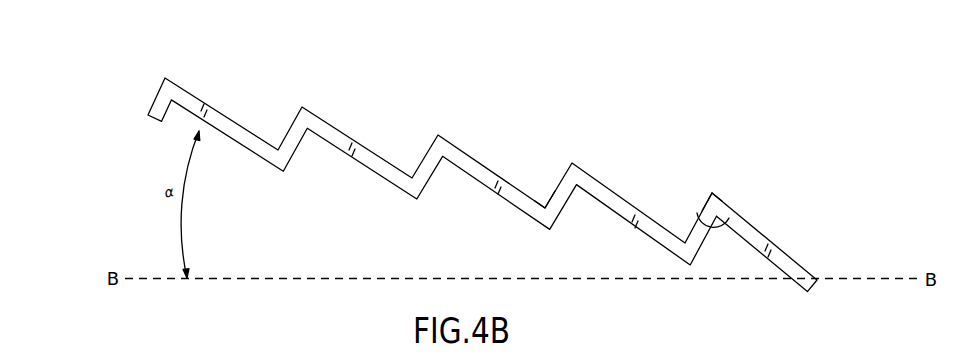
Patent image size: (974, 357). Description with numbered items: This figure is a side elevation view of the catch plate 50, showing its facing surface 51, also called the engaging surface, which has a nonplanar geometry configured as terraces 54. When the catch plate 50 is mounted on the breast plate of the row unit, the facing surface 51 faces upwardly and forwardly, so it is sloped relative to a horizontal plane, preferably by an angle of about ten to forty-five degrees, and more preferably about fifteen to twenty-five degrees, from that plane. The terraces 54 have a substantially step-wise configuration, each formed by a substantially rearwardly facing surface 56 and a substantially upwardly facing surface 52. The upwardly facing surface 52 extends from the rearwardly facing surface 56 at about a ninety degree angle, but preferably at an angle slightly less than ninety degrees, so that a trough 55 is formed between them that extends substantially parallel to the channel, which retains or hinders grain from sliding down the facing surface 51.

The catch plate 50 is at (104, 66).
The facing surface 51 is at (450, 125).
The upwardly facing surface 52 is at (759, 218).
The terraces 54 is at (712, 191).
The trough 55 is at (545, 207).
The rearwardly facing surface 56 is at (700, 216).